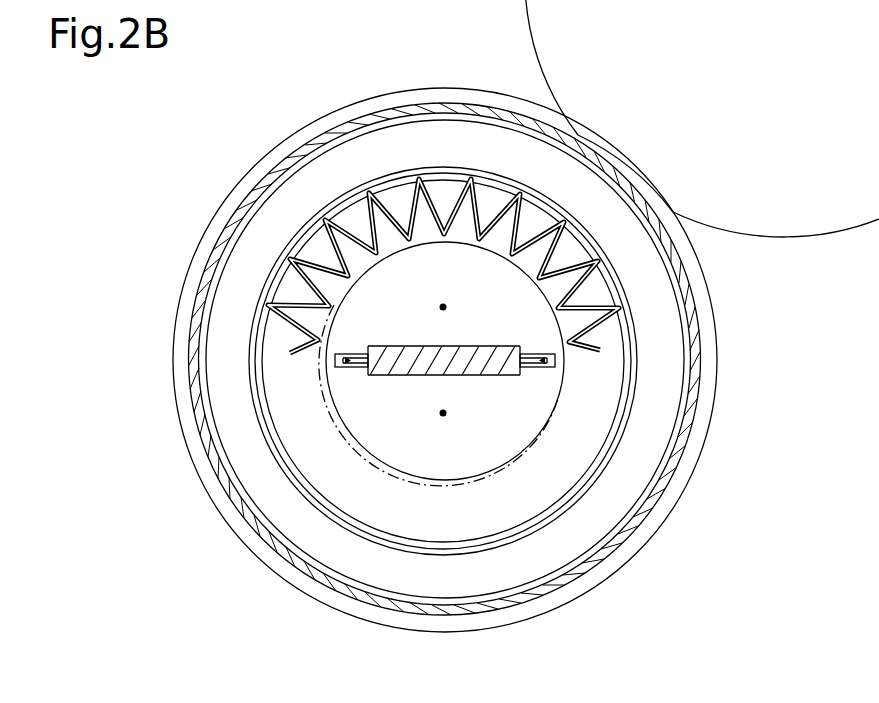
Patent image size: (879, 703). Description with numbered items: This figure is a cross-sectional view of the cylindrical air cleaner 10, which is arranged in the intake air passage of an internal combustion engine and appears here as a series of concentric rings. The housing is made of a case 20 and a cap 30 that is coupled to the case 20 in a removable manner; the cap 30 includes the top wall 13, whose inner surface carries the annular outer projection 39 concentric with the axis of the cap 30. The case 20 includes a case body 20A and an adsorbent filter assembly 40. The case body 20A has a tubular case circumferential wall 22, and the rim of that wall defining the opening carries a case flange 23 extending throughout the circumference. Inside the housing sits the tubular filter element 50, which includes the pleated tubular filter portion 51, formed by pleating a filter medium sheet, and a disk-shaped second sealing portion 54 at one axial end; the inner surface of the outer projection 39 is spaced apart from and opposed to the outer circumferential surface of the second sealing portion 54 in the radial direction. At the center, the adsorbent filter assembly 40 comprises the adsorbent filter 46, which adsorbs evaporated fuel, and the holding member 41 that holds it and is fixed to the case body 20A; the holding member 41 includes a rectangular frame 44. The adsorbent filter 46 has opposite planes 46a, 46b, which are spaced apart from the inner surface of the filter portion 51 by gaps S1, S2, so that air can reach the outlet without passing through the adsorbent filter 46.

The air cleaner 10 is at (780, 106).
The case 20 is at (663, 190).
The case circumferential wall 22 is at (512, 110).
The case flange 23 is at (633, 157).
The top wall 13 is at (667, 371).
The cap 30 is at (654, 501).
The case body 20A is at (696, 431).
The outer projection 39 is at (642, 332).
The filter portion 51 is at (590, 240).
The second sealing portion 54 is at (443, 190).
The filter element 50 is at (598, 291).
The gap S1 is at (443, 303).
The gap S2 is at (443, 418).
The adsorbent filter assembly 40 is at (405, 340).
The holding member 41 is at (343, 377).
The adsorbent filter 46 is at (420, 463).
The plane 46a is at (408, 347).
The plane 46b is at (416, 377).
The rectangular frame 44 is at (528, 376).